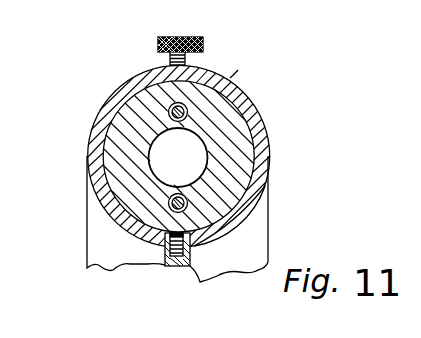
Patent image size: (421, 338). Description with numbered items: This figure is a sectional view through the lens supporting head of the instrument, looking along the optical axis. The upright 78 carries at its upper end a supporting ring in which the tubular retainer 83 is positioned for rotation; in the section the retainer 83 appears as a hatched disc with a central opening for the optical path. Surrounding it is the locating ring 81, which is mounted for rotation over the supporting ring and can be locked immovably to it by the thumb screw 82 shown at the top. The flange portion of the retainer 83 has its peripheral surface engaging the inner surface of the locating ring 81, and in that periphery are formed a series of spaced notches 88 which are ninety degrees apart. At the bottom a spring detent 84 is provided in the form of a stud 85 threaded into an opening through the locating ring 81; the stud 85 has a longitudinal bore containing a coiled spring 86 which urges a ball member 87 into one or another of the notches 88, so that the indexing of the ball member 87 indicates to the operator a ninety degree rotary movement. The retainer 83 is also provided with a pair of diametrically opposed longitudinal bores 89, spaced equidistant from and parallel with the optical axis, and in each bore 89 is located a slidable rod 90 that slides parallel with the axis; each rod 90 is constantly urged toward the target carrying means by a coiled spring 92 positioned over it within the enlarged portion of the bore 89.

The upright 78 is at (269, 262).
The locating ring 81 is at (241, 91).
The thumb screw 82 is at (190, 38).
The tubular retainer 83 is at (238, 128).
The spring detent 84 is at (195, 263).
The stud 85 is at (168, 267).
The coiled spring 86 is at (120, 271).
The ball member 87 is at (167, 240).
The notches 88 is at (104, 160).
The longitudinal bores 89 is at (170, 109).
The slidable rod 90 is at (174, 112).
The coiled spring 92 is at (187, 103).